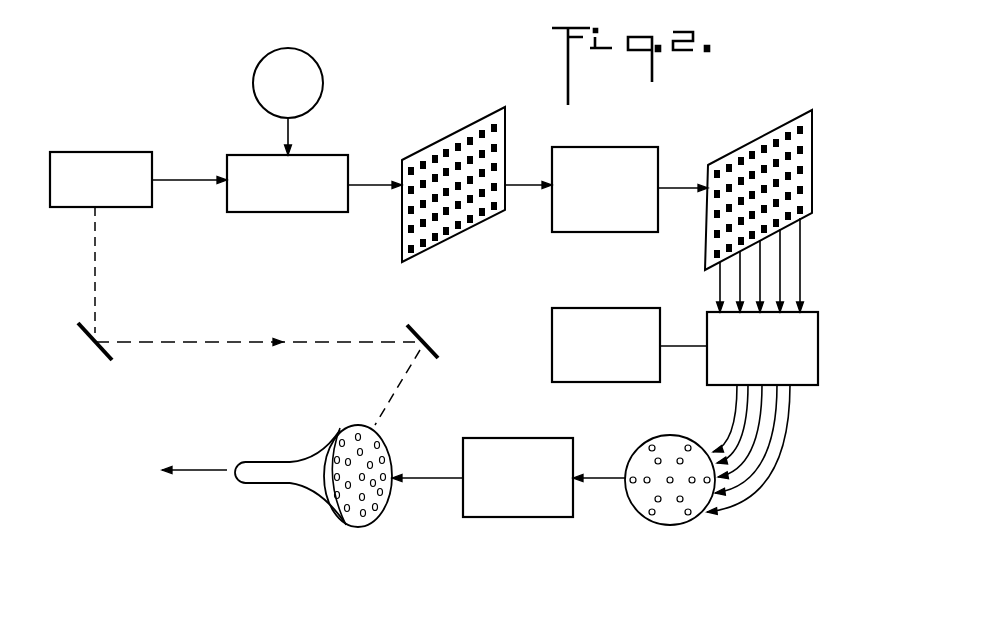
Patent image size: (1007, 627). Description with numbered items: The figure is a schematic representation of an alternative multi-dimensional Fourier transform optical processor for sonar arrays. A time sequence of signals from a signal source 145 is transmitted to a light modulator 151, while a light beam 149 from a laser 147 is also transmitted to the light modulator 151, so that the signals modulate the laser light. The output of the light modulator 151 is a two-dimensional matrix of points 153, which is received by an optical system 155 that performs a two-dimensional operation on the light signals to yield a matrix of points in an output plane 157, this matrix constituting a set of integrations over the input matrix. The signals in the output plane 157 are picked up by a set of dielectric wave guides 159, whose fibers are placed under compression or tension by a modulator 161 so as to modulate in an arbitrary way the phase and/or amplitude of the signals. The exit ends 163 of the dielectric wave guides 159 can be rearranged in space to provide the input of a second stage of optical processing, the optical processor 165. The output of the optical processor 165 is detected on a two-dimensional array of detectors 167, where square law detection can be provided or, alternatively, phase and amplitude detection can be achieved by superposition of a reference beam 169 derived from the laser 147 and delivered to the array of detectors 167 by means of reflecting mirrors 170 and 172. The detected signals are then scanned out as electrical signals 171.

The signal source 145 is at (258, 82).
The laser 147 is at (128, 157).
The light beam 149 is at (195, 185).
The light modulator 151 is at (298, 213).
The two-dimensional matrix of points 153 is at (457, 128).
The optical system 155 is at (612, 148).
The output plane 157 is at (752, 137).
The dielectric wave guides 159 is at (810, 353).
The modulator 161 is at (610, 315).
The exit ends 163 is at (658, 435).
The optical processor 165 is at (538, 428).
The two-dimensional array of detectors 167 is at (352, 427).
The reference beam 169 is at (208, 342).
The reflecting mirror 170 is at (110, 362).
The electrical signals 171 is at (208, 467).
The reflecting mirror 172 is at (413, 325).